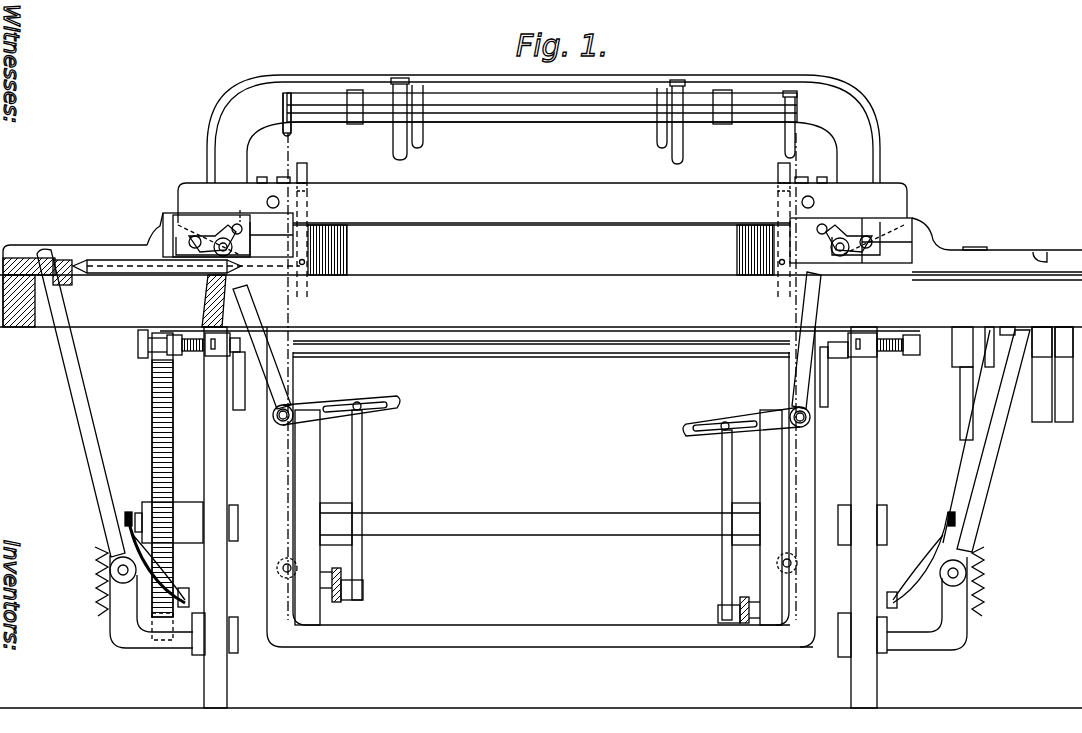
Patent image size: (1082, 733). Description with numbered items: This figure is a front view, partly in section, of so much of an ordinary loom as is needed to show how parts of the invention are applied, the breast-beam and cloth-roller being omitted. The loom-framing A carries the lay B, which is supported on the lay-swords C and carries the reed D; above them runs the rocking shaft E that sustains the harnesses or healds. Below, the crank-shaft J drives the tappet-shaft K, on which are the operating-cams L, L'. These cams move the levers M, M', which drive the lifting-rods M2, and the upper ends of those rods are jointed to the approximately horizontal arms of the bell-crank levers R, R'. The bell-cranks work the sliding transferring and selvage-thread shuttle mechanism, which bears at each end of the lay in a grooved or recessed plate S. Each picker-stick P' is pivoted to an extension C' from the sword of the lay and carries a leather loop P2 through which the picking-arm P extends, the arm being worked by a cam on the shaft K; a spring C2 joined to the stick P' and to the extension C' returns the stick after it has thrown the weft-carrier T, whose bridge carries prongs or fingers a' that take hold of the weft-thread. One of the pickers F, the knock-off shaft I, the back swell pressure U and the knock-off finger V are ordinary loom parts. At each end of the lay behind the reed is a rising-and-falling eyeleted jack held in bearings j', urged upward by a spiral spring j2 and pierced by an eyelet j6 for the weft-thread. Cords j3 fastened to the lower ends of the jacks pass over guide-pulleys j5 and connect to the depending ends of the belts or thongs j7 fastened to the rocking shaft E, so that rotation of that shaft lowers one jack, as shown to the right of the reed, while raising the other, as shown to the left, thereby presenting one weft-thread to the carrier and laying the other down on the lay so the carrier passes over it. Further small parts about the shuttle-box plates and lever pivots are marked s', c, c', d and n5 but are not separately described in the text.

The loom-framing A is at (541, 391).
The lay B is at (541, 254).
The lay-swords C is at (511, 492).
The extension from the sword of the lay C' is at (538, 602).
The spring C2 is at (539, 581).
The reed D is at (541, 250).
The rocking shaft E is at (540, 95).
The picker F is at (81, 403).
The knock-off shaft I is at (498, 344).
The crank-shaft J is at (568, 357).
The tappet-shaft K is at (540, 500).
The operating-cam L is at (236, 479).
The operating-cam L' is at (771, 517).
The lever M is at (341, 597).
The lever M' is at (739, 596).
The lifting-rods M2 is at (362, 480).
The picking-arm P is at (537, 599).
The picker-stick P' is at (539, 441).
The leather loop P2 is at (557, 442).
The bell-crank lever R is at (327, 355).
The bell-crank lever R' is at (743, 354).
The grooved or recessed plate S is at (537, 238).
The screw s' is at (520, 208).
The weft-carrier T is at (542, 272).
The back swell pressure U is at (218, 357).
The knock-off finger V is at (536, 378).
The prongs or fingers a' is at (148, 233).
The catch c is at (530, 242).
The catch plate c' is at (526, 237).
The link d is at (541, 225).
The bearings j' is at (543, 231).
The spiral spring j2 is at (1040, 385).
The cords j3 is at (680, 376).
The guide-pulley j5 is at (537, 564).
The eyelet j6 is at (545, 262).
The belts or thongs j7 is at (535, 113).
The pivot n5 is at (536, 410).